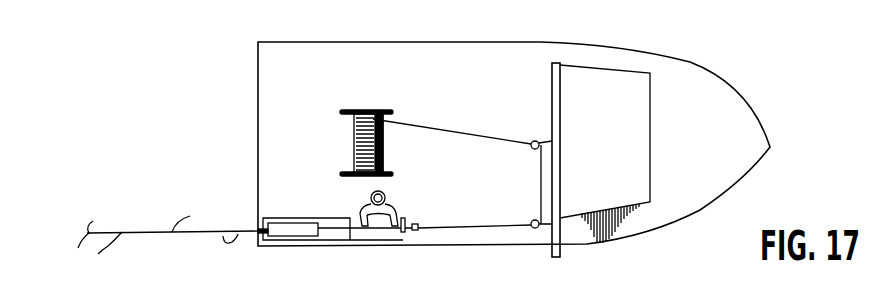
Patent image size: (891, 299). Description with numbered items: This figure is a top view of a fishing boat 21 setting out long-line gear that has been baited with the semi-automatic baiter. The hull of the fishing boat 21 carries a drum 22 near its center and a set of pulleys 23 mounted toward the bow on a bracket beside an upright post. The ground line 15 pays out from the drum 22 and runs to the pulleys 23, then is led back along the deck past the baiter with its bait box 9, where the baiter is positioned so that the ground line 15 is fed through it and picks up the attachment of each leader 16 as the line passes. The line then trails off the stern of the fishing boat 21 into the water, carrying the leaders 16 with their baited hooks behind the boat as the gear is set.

The bait box 9 is at (337, 225).
The ground line 15 is at (458, 131).
The leader 16 is at (180, 215).
The fishing boat 21 is at (706, 127).
The drum 22 is at (383, 110).
The pulleys 23 is at (538, 141).